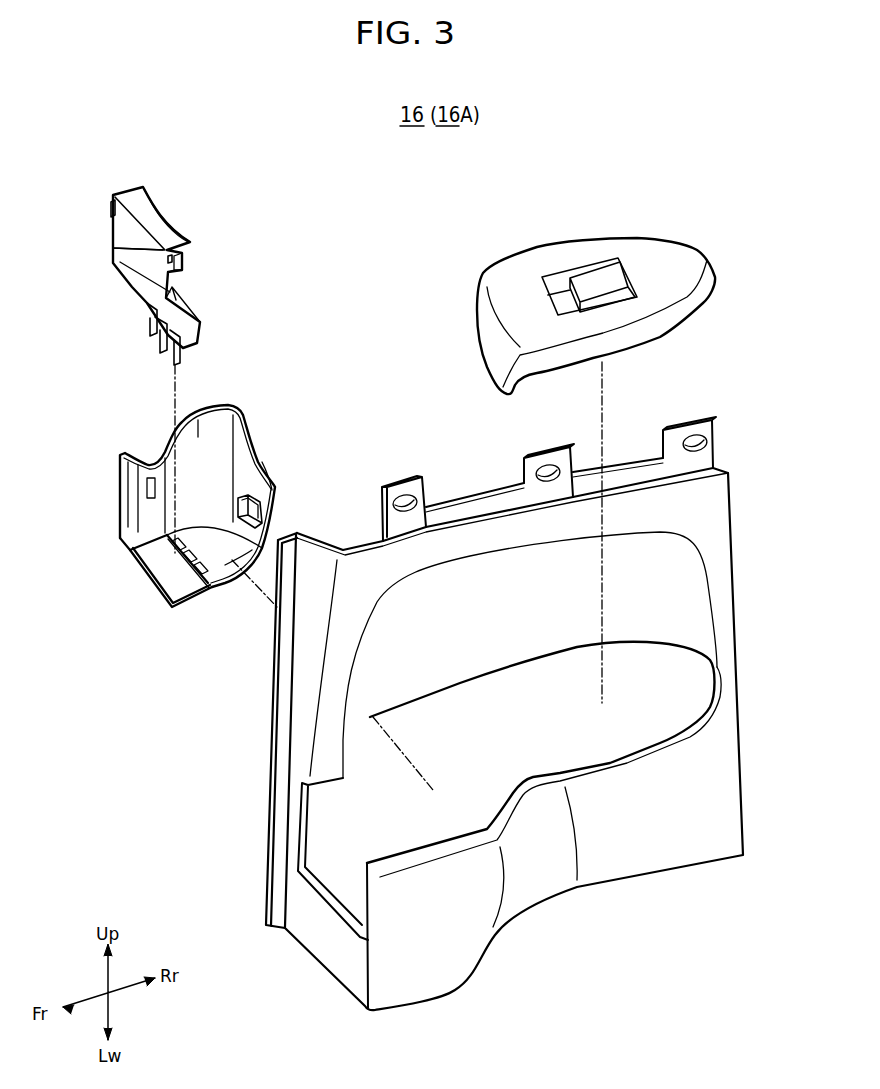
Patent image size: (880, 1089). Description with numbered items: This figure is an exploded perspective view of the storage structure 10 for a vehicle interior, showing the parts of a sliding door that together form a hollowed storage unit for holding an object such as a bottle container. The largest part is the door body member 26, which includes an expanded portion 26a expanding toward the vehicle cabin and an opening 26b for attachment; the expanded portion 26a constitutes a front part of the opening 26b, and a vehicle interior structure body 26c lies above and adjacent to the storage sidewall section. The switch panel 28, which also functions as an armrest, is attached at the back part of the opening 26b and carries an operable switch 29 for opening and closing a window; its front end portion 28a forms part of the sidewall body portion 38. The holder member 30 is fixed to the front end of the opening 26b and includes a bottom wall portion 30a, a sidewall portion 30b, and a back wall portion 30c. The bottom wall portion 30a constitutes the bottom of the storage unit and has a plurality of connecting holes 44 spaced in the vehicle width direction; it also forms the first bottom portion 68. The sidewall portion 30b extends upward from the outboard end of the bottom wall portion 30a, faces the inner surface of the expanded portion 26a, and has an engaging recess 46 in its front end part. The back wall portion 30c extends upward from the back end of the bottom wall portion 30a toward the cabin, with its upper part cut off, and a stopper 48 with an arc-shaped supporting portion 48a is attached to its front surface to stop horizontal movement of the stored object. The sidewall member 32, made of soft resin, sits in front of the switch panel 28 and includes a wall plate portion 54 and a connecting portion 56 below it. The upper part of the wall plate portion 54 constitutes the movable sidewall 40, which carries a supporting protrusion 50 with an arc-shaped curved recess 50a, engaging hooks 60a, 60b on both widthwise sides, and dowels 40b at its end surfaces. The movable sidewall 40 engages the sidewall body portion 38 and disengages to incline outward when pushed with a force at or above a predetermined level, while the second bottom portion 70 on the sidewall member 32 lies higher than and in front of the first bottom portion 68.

The storage structure 10 is at (256, 170).
The door body member 26 is at (262, 730).
The expanded portion 26a is at (437, 917).
The opening 26b is at (545, 686).
The vehicle interior structure body 26c is at (448, 640).
The switch panel 28 is at (645, 236).
The front end portion of the switch panel 28a is at (490, 322).
The operable switch 29 is at (590, 284).
The holder member 30 is at (257, 402).
The bottom wall portion 30a is at (218, 562).
The sidewall portion 30b is at (198, 437).
The back wall portion 30c is at (265, 475).
The sidewall member 32 is at (94, 218).
The sidewall body portion 38 is at (452, 883).
The movable sidewall 40 is at (130, 234).
The dowels 40b is at (184, 274).
The connecting holes 44 is at (150, 577).
The engaging recess 46 is at (151, 478).
The stopper 48 is at (268, 507).
The arc-shaped supporting portion 48a is at (238, 505).
The supporting protrusion 50 is at (142, 186).
The arc-shaped curved recess 50a is at (150, 212).
The wall plate portion 54 is at (128, 272).
The connecting portion 56 is at (172, 360).
The engaging hook 60a is at (112, 205).
The engaging hook 60b is at (173, 260).
The first bottom portion 68 is at (200, 535).
The second bottom portion 70 is at (188, 310).